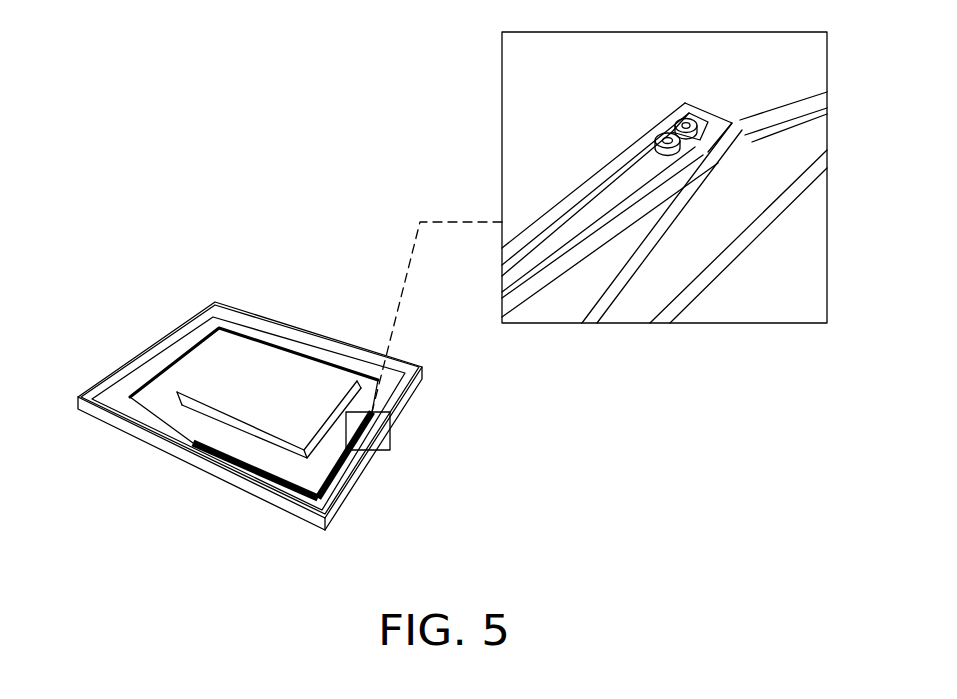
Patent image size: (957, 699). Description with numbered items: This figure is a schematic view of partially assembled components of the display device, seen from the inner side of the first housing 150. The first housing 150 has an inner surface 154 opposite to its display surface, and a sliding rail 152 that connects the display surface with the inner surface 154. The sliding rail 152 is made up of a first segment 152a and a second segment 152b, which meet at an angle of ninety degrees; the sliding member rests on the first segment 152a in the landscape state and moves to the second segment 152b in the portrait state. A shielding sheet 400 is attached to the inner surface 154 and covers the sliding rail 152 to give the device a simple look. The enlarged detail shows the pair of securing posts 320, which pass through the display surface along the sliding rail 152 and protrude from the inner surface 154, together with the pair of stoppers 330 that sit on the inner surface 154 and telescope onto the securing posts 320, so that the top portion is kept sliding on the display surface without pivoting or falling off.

The first housing 150 is at (237, 303).
The sliding rail 152 is at (140, 567).
The first segment 152a is at (222, 458).
The second segment 152b is at (347, 460).
The inner surface 154 is at (120, 410).
The securing posts 320 is at (672, 150).
The stoppers 330 is at (679, 119).
The shielding sheet 400 is at (195, 403).